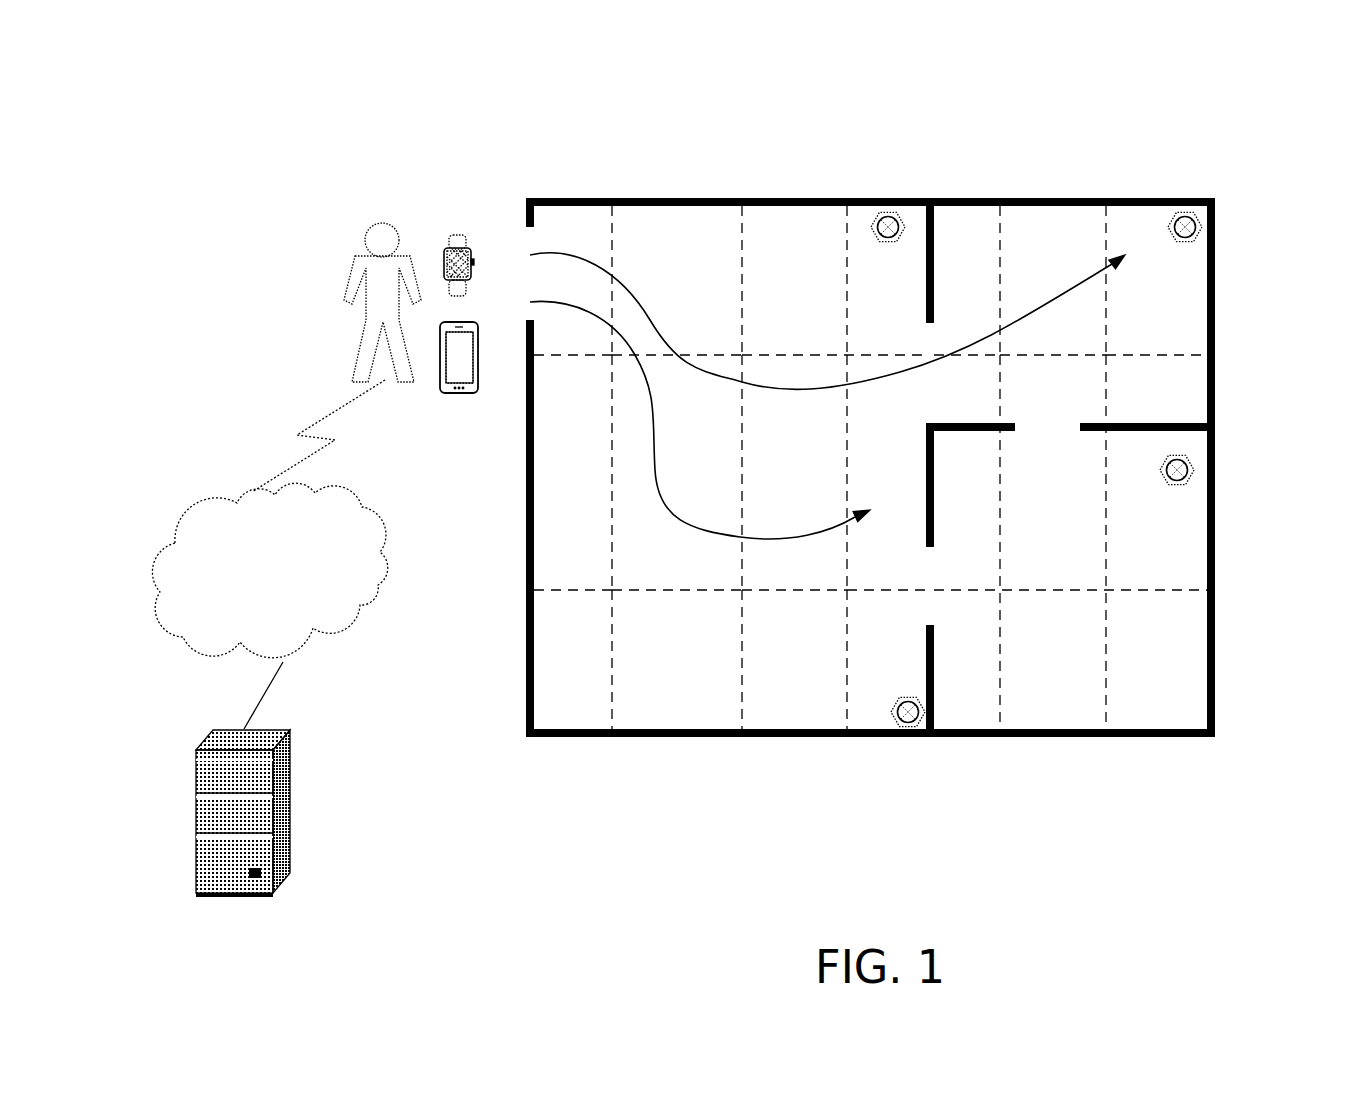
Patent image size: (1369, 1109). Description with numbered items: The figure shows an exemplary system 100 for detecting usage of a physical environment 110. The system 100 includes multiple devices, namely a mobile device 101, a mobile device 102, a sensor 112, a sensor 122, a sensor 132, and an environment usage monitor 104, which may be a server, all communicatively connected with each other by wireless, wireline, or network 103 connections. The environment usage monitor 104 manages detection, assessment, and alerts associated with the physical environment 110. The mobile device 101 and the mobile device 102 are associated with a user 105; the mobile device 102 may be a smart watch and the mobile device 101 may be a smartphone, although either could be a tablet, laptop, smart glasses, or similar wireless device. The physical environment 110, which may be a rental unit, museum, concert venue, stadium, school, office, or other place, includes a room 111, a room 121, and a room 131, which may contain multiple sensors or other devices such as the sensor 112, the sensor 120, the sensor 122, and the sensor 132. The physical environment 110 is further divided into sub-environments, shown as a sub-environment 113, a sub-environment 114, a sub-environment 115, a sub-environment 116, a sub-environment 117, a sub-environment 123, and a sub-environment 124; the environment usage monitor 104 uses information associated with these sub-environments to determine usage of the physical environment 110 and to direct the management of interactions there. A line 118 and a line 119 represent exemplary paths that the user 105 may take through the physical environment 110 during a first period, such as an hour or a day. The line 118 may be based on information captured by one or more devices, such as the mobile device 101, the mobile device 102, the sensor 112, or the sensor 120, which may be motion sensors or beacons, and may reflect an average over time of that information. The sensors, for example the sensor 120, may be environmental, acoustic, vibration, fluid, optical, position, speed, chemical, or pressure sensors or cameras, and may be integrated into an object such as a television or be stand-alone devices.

The system 100 is at (178, 105).
The mobile device 101 is at (468, 396).
The mobile device 102 is at (456, 228).
The network 103 is at (289, 571).
The environment usage monitor 104 is at (215, 737).
The user 105 is at (381, 223).
The physical environment 110 is at (576, 738).
The room 111 is at (672, 211).
The sensor 112 is at (890, 211).
The sub-environment 113 is at (585, 289).
The sub-environment 114 is at (695, 289).
The sub-environment 115 is at (702, 447).
The sub-environment 116 is at (812, 447).
The sub-environment 117 is at (915, 442).
The line 118 is at (718, 535).
The line 119 is at (757, 386).
The sensor 120 is at (893, 716).
The room 121 is at (1046, 211).
The sensor 122 is at (1187, 211).
The sub-environment 123 is at (1070, 287).
The sub-environment 124 is at (1173, 287).
The room 131 is at (1174, 690).
The sensor 132 is at (1190, 483).